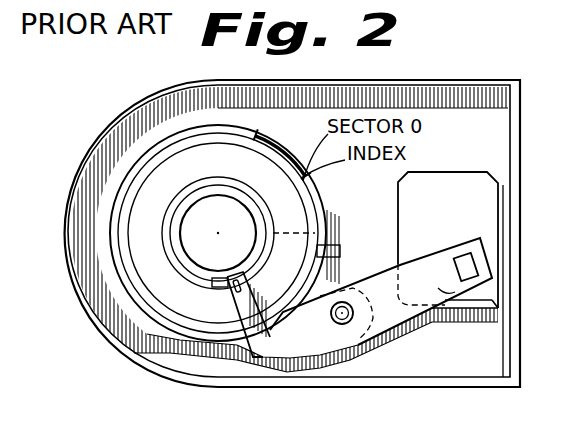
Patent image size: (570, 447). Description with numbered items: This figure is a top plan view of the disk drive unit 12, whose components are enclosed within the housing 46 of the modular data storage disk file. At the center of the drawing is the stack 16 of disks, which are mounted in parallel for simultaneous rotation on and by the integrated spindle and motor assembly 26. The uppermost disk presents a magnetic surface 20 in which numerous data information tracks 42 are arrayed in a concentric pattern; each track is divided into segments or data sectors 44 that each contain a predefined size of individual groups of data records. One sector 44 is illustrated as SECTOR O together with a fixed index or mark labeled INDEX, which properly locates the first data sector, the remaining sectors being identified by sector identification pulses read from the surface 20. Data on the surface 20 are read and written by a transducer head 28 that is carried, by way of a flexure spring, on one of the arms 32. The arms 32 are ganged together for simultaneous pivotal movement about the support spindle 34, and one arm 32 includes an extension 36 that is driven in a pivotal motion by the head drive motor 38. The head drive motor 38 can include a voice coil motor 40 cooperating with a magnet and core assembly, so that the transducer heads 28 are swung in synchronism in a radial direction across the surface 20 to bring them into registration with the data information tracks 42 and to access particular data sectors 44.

The disk drive unit 12 is at (522, 70).
The stack of disks 16 is at (100, 207).
The magnetic surface 20 is at (153, 153).
The integrated spindle and motor assembly 26 is at (193, 243).
The transducer head 28 is at (232, 288).
The arm 32 is at (310, 340).
The support spindle 34 is at (348, 322).
The extension 36 is at (498, 300).
The head drive motor 38 is at (482, 197).
The voice coil motor 40 is at (473, 259).
The data information track 42 is at (212, 285).
The data sector 44 is at (305, 177).
The housing 46 is at (418, 80).